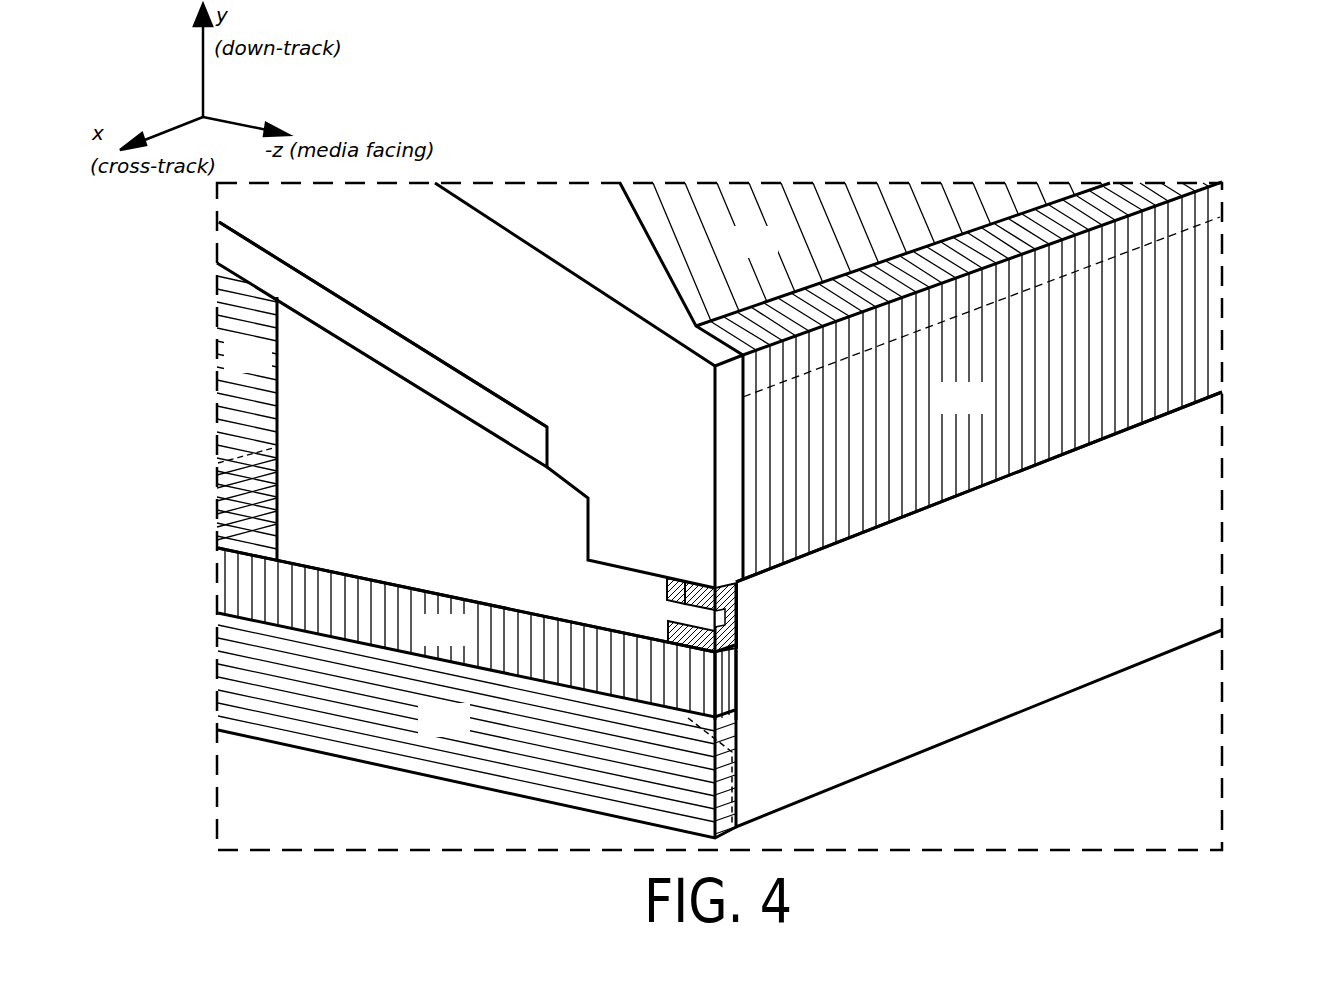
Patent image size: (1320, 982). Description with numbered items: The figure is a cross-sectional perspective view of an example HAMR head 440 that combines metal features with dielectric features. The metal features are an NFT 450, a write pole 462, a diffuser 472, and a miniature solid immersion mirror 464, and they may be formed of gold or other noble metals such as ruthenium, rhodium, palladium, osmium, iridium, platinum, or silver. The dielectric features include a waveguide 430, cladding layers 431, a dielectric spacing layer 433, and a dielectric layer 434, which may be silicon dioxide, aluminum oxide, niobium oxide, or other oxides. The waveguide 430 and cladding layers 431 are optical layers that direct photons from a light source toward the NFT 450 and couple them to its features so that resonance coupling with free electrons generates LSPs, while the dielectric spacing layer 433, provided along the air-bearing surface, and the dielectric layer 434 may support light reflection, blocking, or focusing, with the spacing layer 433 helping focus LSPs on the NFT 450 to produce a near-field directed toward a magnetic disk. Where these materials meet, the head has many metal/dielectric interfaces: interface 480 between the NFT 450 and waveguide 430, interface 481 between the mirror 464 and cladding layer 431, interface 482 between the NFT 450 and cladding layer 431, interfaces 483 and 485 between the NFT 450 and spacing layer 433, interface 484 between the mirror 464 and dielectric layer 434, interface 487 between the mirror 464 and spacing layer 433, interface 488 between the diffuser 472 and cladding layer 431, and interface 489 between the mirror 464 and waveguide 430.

The HAMR head 440 is at (1006, 116).
The cladding layers 431 is at (272, 374).
The waveguide 430 is at (233, 508).
The interface 482 is at (277, 467).
The interface 480 is at (343, 573).
The diffuser 472 is at (487, 412).
The interface 488 is at (252, 278).
The NFT 450 is at (445, 511).
The write pole 462 is at (663, 457).
The dielectric layer 434 is at (776, 256).
The miniature solid immersion mirror 464 is at (1018, 617).
The interface 484 is at (1072, 450).
The interface 485 is at (667, 590).
The interface 483 is at (688, 600).
The dielectric spacing layer 433 is at (738, 597).
The interface 487 is at (738, 630).
The interface 489 is at (738, 683).
The interface 481 is at (738, 750).